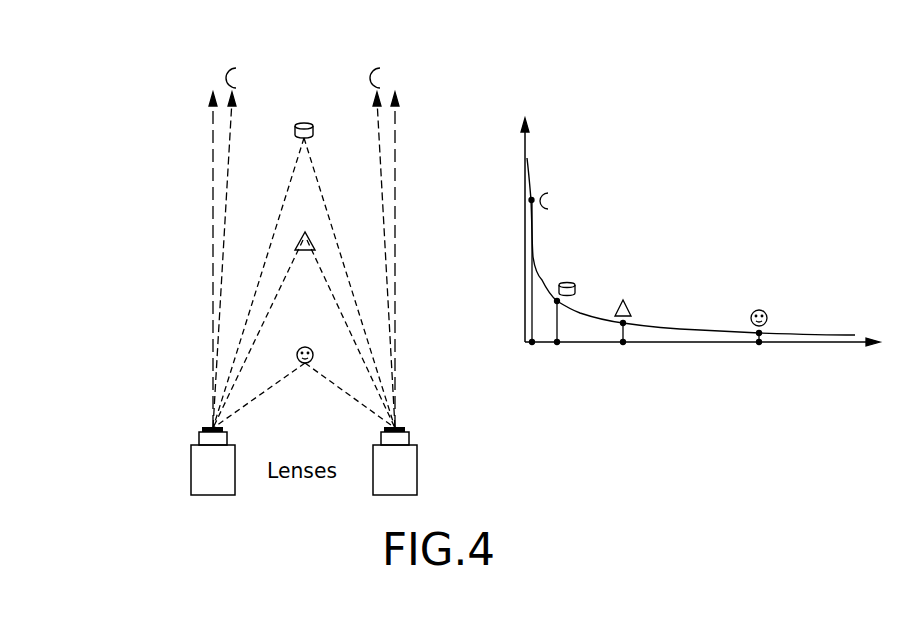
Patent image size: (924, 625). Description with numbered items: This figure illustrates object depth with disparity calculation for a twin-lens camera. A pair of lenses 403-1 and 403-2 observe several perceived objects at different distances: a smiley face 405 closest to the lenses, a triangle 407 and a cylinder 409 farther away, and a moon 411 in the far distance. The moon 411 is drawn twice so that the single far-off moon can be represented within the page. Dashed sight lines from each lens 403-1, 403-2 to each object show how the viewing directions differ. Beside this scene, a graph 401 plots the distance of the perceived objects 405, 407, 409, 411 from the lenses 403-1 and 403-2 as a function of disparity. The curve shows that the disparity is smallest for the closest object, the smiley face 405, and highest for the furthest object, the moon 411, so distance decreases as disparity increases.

The graph 401 is at (539, 258).
The lens 403-1 is at (191, 470).
The lens 403-2 is at (417, 470).
The smiley face 405 is at (303, 363).
The perceived object 407 is at (303, 252).
The perceived object 409 is at (304, 122).
The moon 411 is at (230, 68).